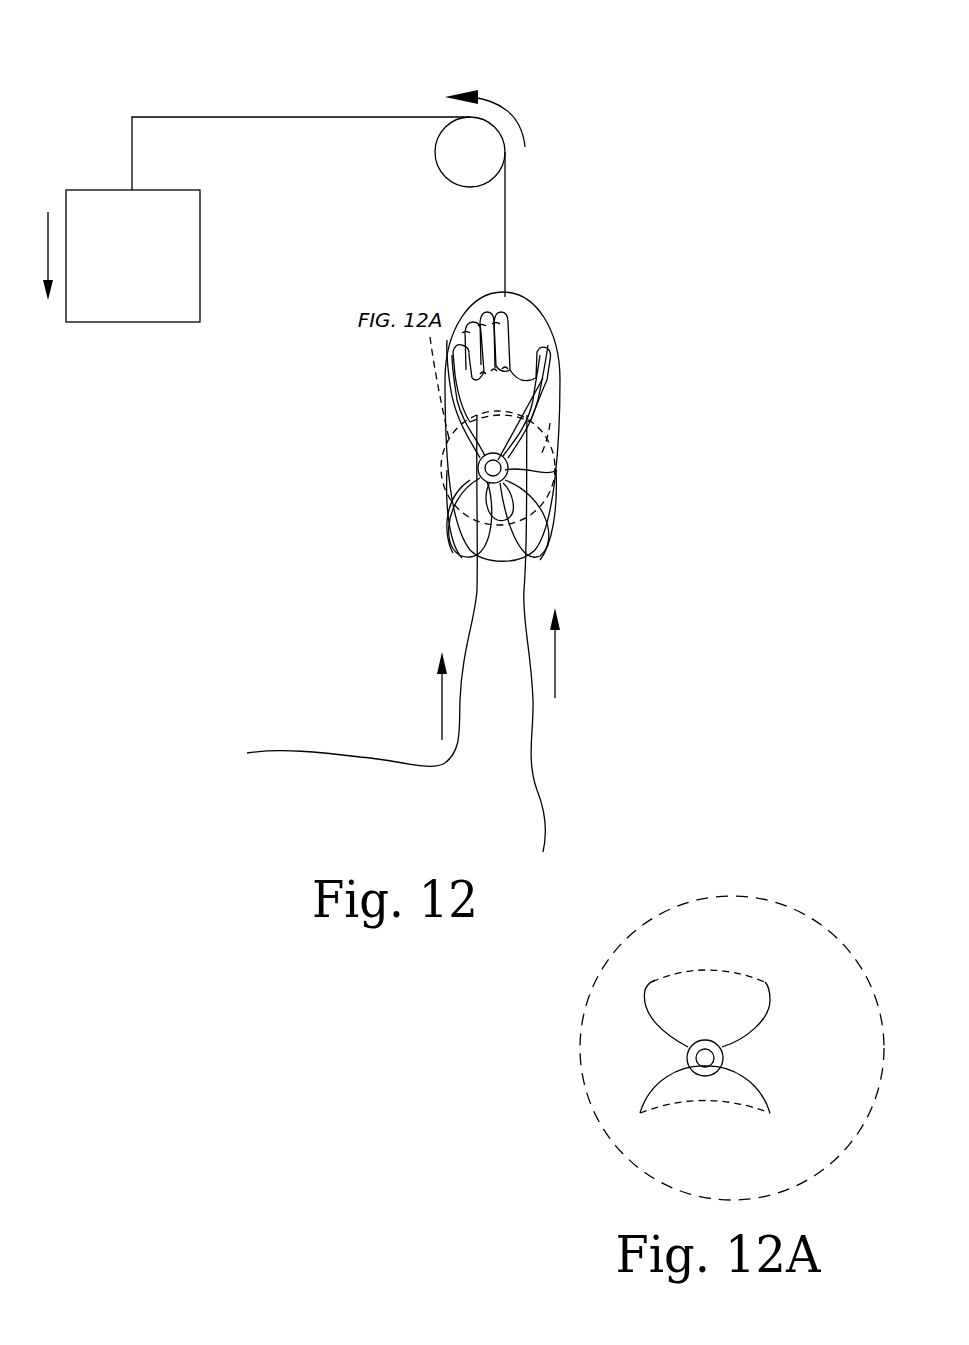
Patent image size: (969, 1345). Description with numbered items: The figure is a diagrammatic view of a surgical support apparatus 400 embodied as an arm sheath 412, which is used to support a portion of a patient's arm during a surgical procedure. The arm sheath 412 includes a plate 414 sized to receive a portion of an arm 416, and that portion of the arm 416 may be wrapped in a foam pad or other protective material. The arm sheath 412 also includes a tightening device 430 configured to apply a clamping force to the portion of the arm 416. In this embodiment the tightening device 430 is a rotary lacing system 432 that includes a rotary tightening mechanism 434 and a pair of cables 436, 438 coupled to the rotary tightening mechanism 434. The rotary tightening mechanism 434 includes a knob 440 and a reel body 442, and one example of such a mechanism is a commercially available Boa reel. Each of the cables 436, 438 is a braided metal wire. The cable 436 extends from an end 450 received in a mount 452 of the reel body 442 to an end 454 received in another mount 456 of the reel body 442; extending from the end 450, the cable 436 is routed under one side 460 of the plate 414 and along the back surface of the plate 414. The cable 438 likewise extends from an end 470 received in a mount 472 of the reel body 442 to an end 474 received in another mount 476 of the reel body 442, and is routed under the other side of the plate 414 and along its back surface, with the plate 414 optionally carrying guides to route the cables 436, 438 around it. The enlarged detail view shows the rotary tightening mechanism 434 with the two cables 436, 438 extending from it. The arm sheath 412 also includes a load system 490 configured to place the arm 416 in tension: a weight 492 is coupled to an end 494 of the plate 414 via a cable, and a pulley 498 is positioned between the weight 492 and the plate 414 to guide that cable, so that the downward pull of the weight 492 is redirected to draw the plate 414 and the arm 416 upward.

In FIG. 12, the surgical support apparatus 400 is at (680, 168).
In FIG. 12, the arm sheath 412 is at (600, 429).
In FIG. 12, the plate 414 is at (543, 320).
In FIG. 12, the arm 416 is at (522, 592).
In FIG. 12, the tightening device 430 is at (575, 468).
In FIG. 12, the rotary lacing system 432 is at (420, 482).
In FIG. 12, the rotary tightening mechanism 434 is at (458, 487).
In FIG. 12A, the rotary tightening mechanism 434 is at (697, 1056).
In FIG. 12, the cable 436 is at (543, 432).
In FIG. 12A, the cable 436 is at (770, 1017).
In FIG. 12, the cable 438 is at (452, 518).
In FIG. 12A, the cable 438 is at (769, 1095).
In FIG. 12, the knob 440 is at (540, 398).
In FIG. 12, the reel body 442 is at (545, 510).
In FIG. 12, the end 450 is at (450, 443).
In FIG. 12, the mount 452 is at (455, 462).
In FIG. 12, the end 454 is at (520, 458).
In FIG. 12, the mount 456 is at (530, 475).
In FIG. 12, the side 460 is at (450, 425).
In FIG. 12, the end 470 is at (452, 527).
In FIG. 12, the mount 472 is at (453, 557).
In FIG. 12, the end 474 is at (546, 547).
In FIG. 12, the mount 476 is at (541, 597).
In FIG. 12, the load system 490 is at (332, 76).
In FIG. 12, the weight 492 is at (104, 305).
In FIG. 12, the end 494 is at (511, 297).
In FIG. 12, the pulley 498 is at (441, 144).